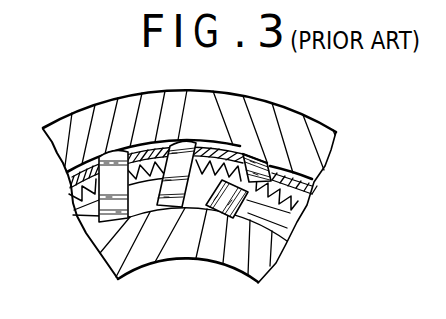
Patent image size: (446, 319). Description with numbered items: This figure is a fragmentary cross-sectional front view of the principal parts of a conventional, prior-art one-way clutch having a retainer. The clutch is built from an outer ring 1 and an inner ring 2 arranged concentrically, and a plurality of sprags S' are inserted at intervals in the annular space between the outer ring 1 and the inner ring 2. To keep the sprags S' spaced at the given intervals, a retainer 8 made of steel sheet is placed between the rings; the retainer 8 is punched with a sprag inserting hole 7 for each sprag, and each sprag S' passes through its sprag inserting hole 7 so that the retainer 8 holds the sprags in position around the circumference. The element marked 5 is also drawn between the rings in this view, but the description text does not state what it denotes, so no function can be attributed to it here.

The outer ring 1 is at (292, 126).
The inner ring 2 is at (207, 252).
The corrugated spring 5 is at (297, 204).
The sprag inserting hole 7 is at (261, 156).
The retainer 8 is at (303, 187).
The sprags S' is at (197, 233).